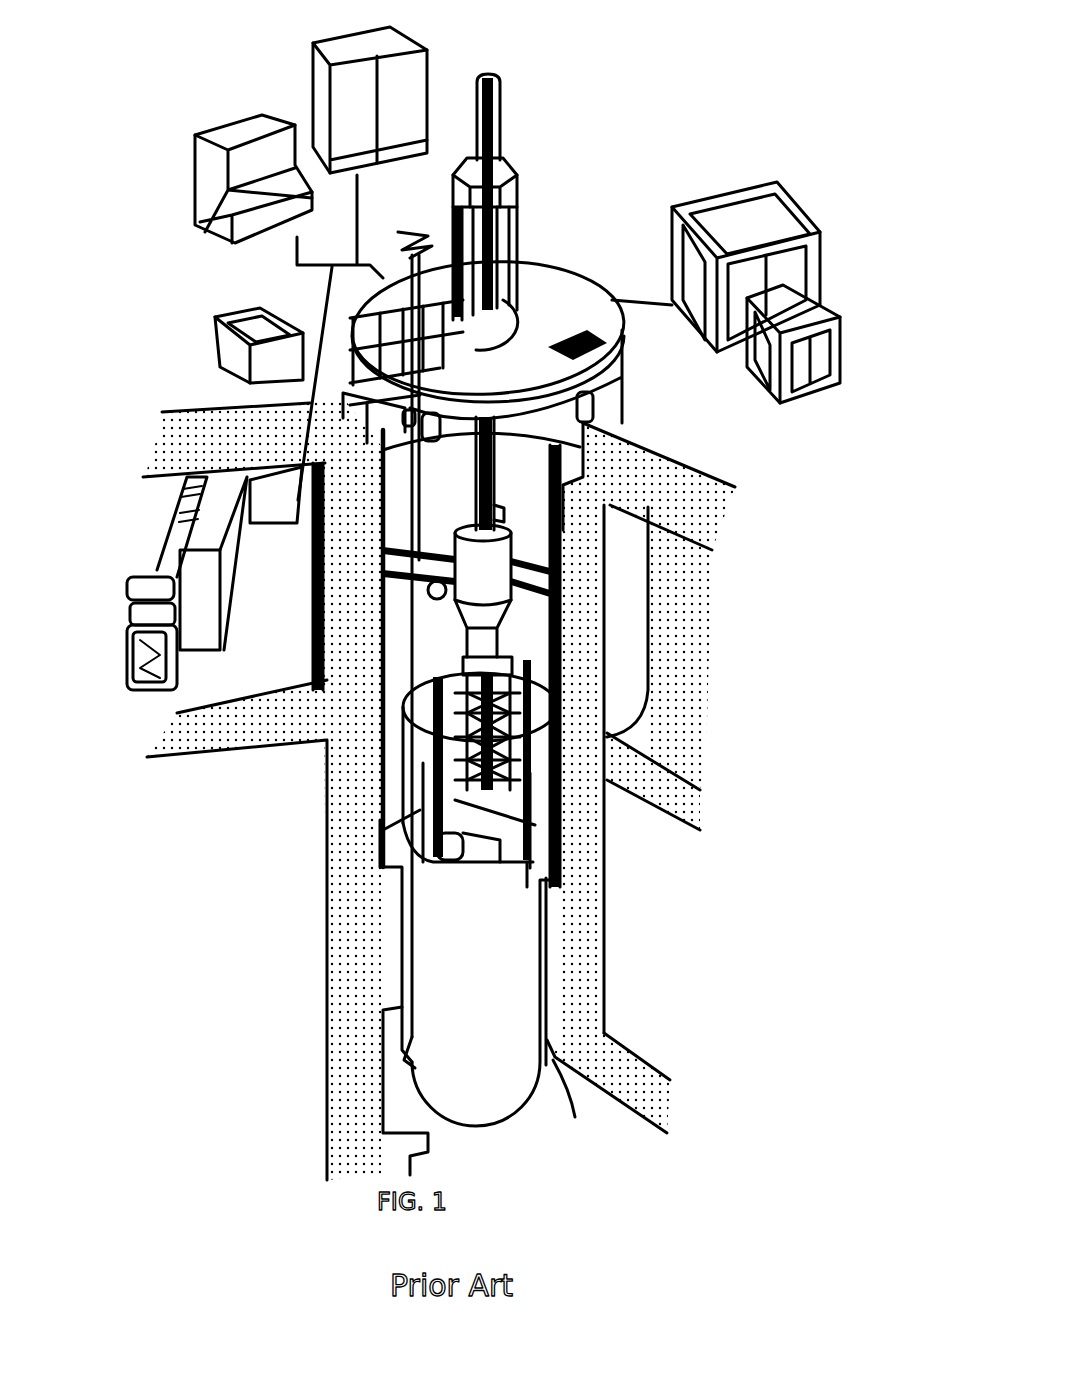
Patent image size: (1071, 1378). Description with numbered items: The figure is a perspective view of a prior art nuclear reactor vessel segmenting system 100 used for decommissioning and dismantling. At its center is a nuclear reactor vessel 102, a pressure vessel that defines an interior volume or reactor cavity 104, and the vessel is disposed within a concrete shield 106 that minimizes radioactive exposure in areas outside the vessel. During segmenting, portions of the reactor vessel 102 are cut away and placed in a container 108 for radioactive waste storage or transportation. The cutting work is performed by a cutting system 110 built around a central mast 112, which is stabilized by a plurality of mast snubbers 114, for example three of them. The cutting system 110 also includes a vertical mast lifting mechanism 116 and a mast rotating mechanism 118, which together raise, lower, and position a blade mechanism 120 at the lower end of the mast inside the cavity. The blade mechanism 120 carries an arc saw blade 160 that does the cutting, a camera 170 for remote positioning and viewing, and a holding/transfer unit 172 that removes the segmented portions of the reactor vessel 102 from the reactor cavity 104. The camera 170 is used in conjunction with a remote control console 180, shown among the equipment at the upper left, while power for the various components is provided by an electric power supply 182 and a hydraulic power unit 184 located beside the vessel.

The nuclear reactor vessel segmenting system 100 is at (162, 269).
The nuclear reactor vessel 102 is at (473, 957).
The reactor cavity 104 is at (393, 509).
The concrete shield 106 is at (560, 823).
The container 108 is at (223, 363).
The cutting system 110 is at (488, 72).
The central mast 112 is at (500, 112).
The mast snubbers 114 is at (530, 575).
The mast lifting mechanism 116 is at (517, 176).
The mast rotating mechanism 118 is at (620, 355).
The blade mechanism 120 is at (427, 832).
The arc saw blade 160 is at (527, 884).
The camera 170 is at (440, 588).
The holding/transfer unit 172 is at (405, 737).
The remote control console 180 is at (333, 23).
The electric power supply 182 is at (160, 568).
The hydraulic power unit 184 is at (823, 290).